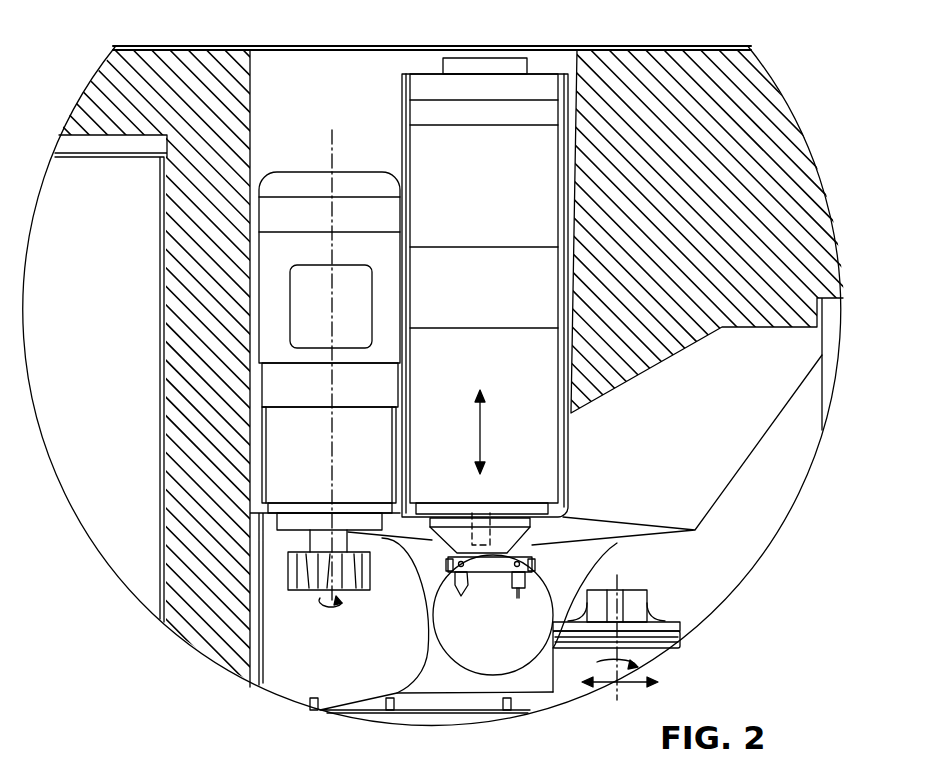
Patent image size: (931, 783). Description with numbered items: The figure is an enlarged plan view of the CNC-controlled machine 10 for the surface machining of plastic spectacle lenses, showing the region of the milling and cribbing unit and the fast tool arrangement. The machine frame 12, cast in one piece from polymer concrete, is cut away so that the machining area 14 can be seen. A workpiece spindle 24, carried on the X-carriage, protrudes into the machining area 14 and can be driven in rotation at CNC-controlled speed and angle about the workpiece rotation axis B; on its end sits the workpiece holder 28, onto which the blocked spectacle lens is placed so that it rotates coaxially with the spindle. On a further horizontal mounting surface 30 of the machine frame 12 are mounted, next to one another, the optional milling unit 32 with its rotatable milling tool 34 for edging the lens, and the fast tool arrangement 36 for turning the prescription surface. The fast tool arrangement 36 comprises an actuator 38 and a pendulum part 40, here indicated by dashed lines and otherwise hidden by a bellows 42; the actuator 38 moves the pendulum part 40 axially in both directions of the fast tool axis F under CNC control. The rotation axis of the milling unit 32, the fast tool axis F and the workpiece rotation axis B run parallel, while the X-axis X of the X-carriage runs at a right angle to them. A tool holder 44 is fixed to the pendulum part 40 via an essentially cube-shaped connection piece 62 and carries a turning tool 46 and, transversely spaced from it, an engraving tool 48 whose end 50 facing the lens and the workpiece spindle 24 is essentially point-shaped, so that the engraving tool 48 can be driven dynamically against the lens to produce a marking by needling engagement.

The CNC-controlled machine 10 is at (641, 48).
The machine frame 12 is at (745, 101).
The machining area 14 is at (287, 666).
The workpiece spindle 24 is at (567, 682).
The workpiece holder 28 is at (642, 613).
The horizontal mounting surface 30 is at (280, 68).
The milling unit 32 is at (289, 248).
The milling tool 34 is at (302, 590).
The fast tool arrangement 36 is at (440, 262).
The actuator 38 is at (496, 199).
The pendulum part 40 is at (482, 530).
The bellows 42 is at (447, 528).
The tool holder 44 is at (528, 558).
The turning tool 46 is at (462, 588).
The engraving tool 48 is at (513, 582).
The end of the engraving tool 50 is at (519, 593).
The connection piece 62 is at (447, 563).
The fast tool axis F is at (480, 434).
The workpiece rotation axis B is at (642, 668).
The X-axis X is at (624, 686).